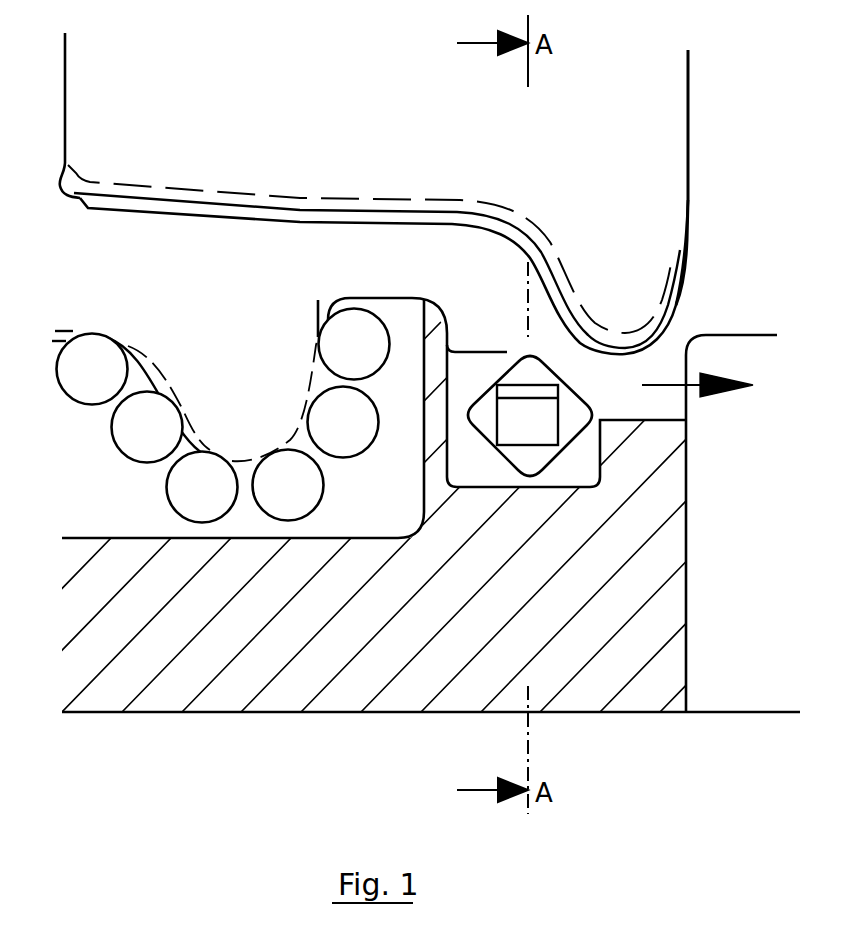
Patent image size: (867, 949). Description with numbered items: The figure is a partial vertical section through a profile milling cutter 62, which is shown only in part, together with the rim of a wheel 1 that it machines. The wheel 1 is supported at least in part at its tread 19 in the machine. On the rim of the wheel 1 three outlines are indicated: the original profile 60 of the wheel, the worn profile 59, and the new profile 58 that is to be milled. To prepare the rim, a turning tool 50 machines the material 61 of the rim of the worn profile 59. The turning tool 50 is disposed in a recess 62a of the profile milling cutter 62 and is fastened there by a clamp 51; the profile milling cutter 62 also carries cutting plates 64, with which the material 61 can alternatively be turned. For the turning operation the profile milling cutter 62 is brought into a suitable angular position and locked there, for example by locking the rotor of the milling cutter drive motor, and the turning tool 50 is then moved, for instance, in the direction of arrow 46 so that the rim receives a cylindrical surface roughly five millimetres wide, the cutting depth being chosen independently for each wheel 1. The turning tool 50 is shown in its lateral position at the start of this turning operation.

The wheel 1 is at (610, 233).
The tread 19 is at (244, 170).
The arrow 46 is at (697, 393).
The turning tool 50 is at (592, 399).
The clamp 51 is at (533, 420).
The new profile 58 is at (265, 192).
The worn profile 59 is at (360, 212).
The original profile 60 is at (410, 223).
The material 61 is at (679, 298).
The profile milling cutter 62 is at (562, 597).
The recess 62a is at (467, 465).
The cutting plate 64 is at (92, 372).